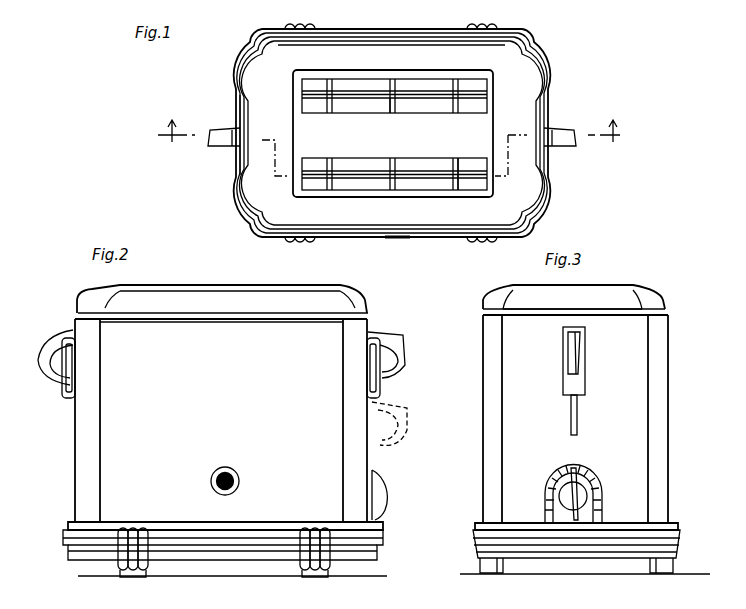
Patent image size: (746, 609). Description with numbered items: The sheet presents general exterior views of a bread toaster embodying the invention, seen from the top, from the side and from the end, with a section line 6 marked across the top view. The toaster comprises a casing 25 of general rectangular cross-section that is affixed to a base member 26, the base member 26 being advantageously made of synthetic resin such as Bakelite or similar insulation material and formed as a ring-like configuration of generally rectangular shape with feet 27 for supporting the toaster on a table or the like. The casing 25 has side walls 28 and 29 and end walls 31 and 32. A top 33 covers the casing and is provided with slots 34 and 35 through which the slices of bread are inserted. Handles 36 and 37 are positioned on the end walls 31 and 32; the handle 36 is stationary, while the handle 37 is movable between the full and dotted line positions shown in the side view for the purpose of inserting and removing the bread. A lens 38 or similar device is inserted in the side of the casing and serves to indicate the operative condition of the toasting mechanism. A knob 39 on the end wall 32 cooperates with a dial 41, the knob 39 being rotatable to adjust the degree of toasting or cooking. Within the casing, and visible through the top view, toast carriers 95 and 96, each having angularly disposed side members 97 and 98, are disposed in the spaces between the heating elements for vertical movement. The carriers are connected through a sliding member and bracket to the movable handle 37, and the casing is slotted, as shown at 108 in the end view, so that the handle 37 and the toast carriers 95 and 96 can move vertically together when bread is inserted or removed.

In FIG. 1, the section line 6- 6 is at (393, 147).
In FIG. 2, the casing 25 is at (72, 447).
In FIG. 3, the casing 25 is at (676, 400).
In FIG. 1, the base member 26 is at (545, 172).
In FIG. 2, the base member 26 is at (190, 540).
In FIG. 3, the base member 26 is at (666, 536).
In FIG. 1, the feet 27 is at (312, 26).
In FIG. 2, the feet 27 is at (302, 560).
In FIG. 3, the feet 27 is at (648, 563).
In FIG. 1, the side wall 28 is at (386, 33).
In FIG. 1, the side wall 29 is at (428, 238).
In FIG. 2, the side wall 29 is at (221, 366).
In FIG. 1, the end wall 31 is at (246, 117).
In FIG. 1, the end wall 32 is at (545, 100).
In FIG. 3, the end wall 32 is at (593, 361).
In FIG. 1, the top 33 is at (514, 88).
In FIG. 2, the top 33 is at (305, 298).
In FIG. 3, the top 33 is at (642, 293).
In FIG. 1, the slot 34 is at (505, 48).
In FIG. 1, the slot 35 is at (473, 193).
In FIG. 1, the handle 36 is at (222, 142).
In FIG. 2, the handle 36 is at (49, 333).
In FIG. 1, the handle 37 is at (566, 133).
In FIG. 2, the handle 37 is at (403, 335).
In FIG. 1, the lens 38 is at (395, 238).
In FIG. 2, the lens 38 is at (237, 475).
In FIG. 2, the knob 39 is at (382, 481).
In FIG. 3, the knob 39 is at (584, 481).
In FIG. 3, the dial 41 is at (599, 491).
In FIG. 1, the toast carrier 95 is at (425, 92).
In FIG. 1, the toast carrier 96 is at (425, 170).
In FIG. 1, the side member 97 is at (388, 85).
In FIG. 1, the side member 98 is at (389, 108).
In FIG. 3, the slot 108 is at (578, 412).